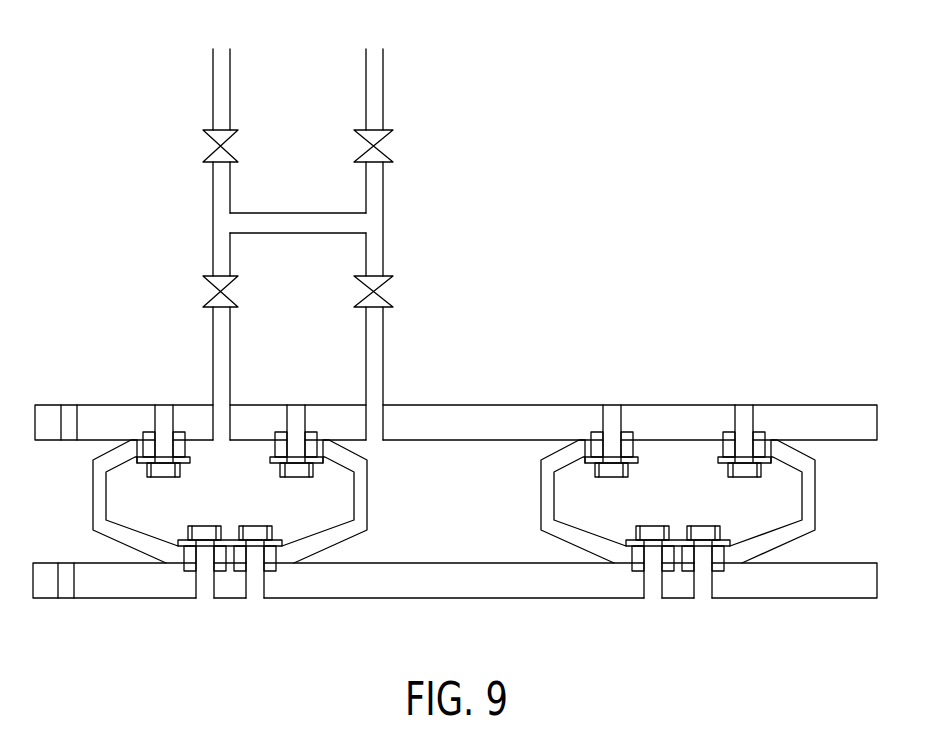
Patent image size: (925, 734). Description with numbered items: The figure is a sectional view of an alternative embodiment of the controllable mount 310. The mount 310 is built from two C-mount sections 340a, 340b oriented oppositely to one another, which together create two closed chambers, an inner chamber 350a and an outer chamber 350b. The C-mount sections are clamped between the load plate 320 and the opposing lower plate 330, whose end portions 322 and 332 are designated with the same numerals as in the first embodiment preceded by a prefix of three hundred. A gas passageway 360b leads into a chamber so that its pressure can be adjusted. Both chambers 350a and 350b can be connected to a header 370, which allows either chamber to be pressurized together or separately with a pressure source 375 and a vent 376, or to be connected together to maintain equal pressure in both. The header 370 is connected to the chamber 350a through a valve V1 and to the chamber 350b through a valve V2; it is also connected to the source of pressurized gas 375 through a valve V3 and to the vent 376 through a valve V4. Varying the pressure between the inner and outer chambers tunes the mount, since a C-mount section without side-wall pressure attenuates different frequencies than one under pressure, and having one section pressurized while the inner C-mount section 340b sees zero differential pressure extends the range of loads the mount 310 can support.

The controllable mount 310 is at (657, 296).
The load plate 320 is at (527, 412).
The upper plate end portion 322 is at (67, 413).
The lower plate 330 is at (580, 587).
The lower plate end portion 332 is at (65, 592).
The C-mount section 340a is at (97, 507).
The inner C-mount section 340b is at (545, 508).
The inner chamber 350a is at (453, 501).
The outer chamber 350b is at (473, 547).
The gas passageway 360b is at (374, 412).
The header 370 is at (363, 225).
The pressure source 375 is at (222, 47).
The vent 376 is at (375, 47).
The valve V1 is at (218, 291).
The valve V2 is at (378, 291).
The valve V3 is at (218, 147).
The valve V4 is at (378, 147).